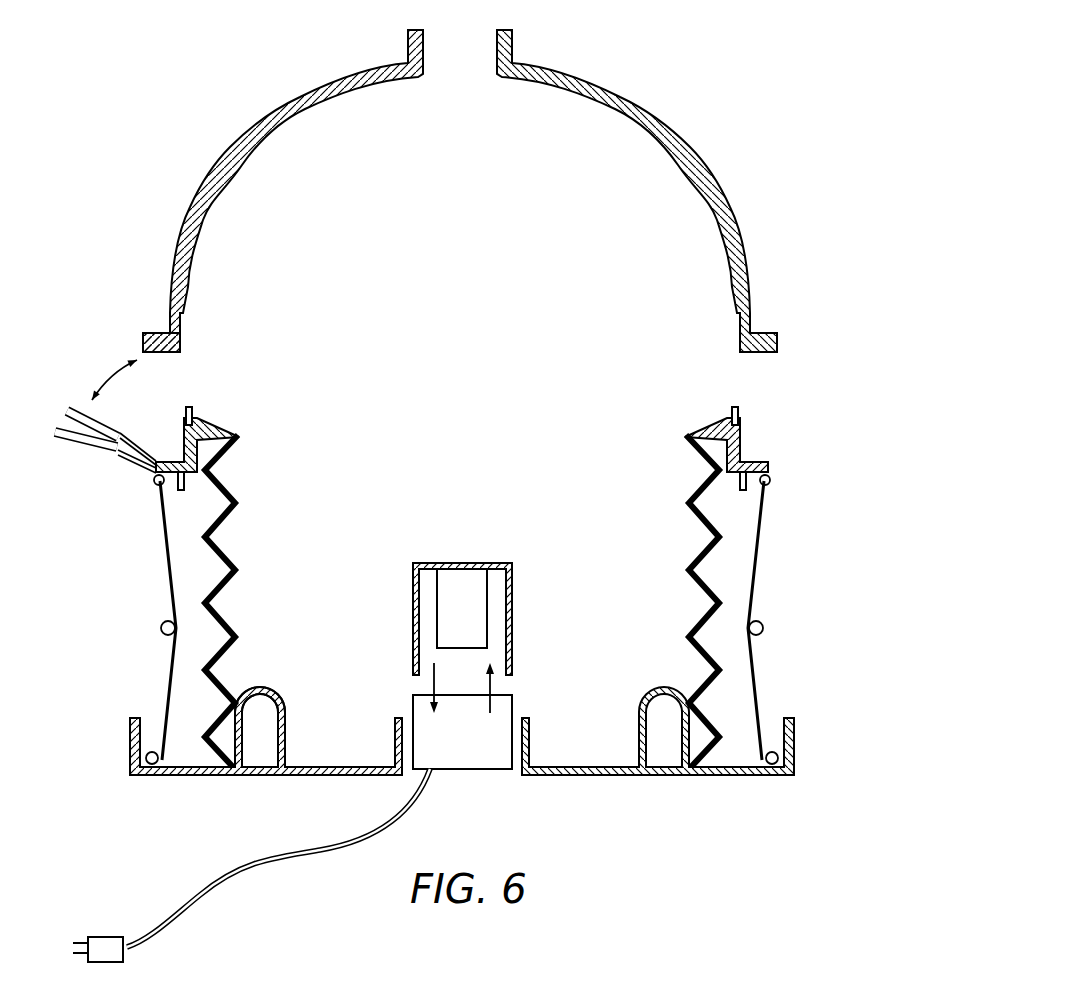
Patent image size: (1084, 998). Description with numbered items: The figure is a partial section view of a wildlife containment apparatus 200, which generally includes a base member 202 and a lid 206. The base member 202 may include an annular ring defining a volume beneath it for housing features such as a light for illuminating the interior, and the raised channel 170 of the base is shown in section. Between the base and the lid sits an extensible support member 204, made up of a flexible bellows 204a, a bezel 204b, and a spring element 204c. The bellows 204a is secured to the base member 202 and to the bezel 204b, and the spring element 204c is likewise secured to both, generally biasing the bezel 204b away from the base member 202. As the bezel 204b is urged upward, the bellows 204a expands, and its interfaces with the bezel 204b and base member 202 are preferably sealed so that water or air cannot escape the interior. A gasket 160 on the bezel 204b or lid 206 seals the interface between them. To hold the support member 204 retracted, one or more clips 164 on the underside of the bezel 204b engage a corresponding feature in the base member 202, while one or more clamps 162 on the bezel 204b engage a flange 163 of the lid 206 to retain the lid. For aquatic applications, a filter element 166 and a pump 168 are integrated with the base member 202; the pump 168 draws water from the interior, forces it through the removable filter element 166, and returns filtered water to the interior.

The wildlife containment apparatus 200 is at (508, 492).
The lid 206 is at (707, 153).
The flange 163 is at (155, 330).
The clamps 162 is at (90, 400).
The clips 164 is at (177, 482).
The gasket 160 is at (780, 399).
The extensible support member 204 is at (823, 564).
The flexible bellows 204a is at (723, 600).
The bezel 204b is at (770, 463).
The spring element 204c is at (763, 537).
The base member 202 is at (792, 740).
The raised channel 170 is at (283, 722).
The filter element 166 is at (512, 583).
The pump 168 is at (512, 707).